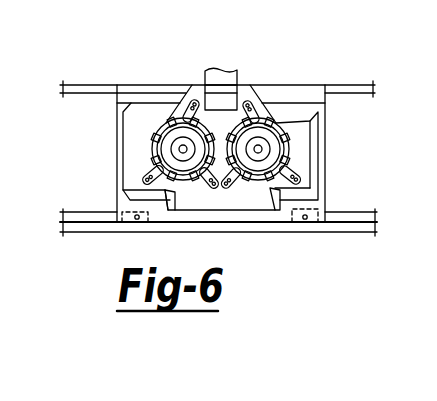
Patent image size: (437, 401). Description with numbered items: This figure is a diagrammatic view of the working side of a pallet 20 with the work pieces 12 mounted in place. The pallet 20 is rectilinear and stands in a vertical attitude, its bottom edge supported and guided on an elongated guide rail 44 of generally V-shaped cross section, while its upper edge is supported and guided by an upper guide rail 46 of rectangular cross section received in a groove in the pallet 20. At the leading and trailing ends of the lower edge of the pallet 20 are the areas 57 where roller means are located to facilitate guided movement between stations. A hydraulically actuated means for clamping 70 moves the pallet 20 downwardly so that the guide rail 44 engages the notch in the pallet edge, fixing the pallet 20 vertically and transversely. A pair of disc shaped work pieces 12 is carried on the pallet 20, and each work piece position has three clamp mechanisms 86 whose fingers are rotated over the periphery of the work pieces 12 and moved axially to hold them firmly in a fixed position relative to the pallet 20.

The work piece 12 is at (165, 148).
The pallet 20 is at (305, 90).
The guide rail 44 is at (362, 214).
The upper guide rail 46 is at (354, 83).
The roller means area 57 is at (136, 221).
The means for clamping 70 is at (234, 70).
The clamp mechanism 86 is at (247, 100).